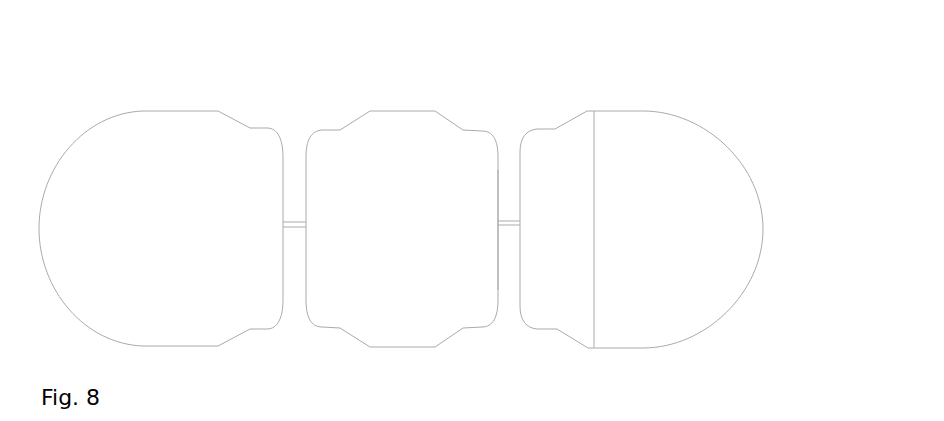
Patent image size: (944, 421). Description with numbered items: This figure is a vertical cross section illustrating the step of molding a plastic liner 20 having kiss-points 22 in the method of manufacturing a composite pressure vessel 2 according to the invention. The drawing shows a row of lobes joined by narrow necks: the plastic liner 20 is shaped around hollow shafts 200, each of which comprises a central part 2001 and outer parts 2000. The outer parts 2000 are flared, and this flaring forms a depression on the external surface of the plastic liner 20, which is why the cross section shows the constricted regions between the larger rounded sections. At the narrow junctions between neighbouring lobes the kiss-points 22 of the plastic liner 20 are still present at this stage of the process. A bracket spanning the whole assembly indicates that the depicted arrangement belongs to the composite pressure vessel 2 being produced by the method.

The composite pressure vessel 2 is at (823, 108).
The plastic liner 20 is at (703, 108).
The hollow shafts 200 is at (594, 229).
The outer parts 2000 is at (456, 133).
The central part 2001 is at (497, 234).
The kiss-points 22 is at (509, 202).